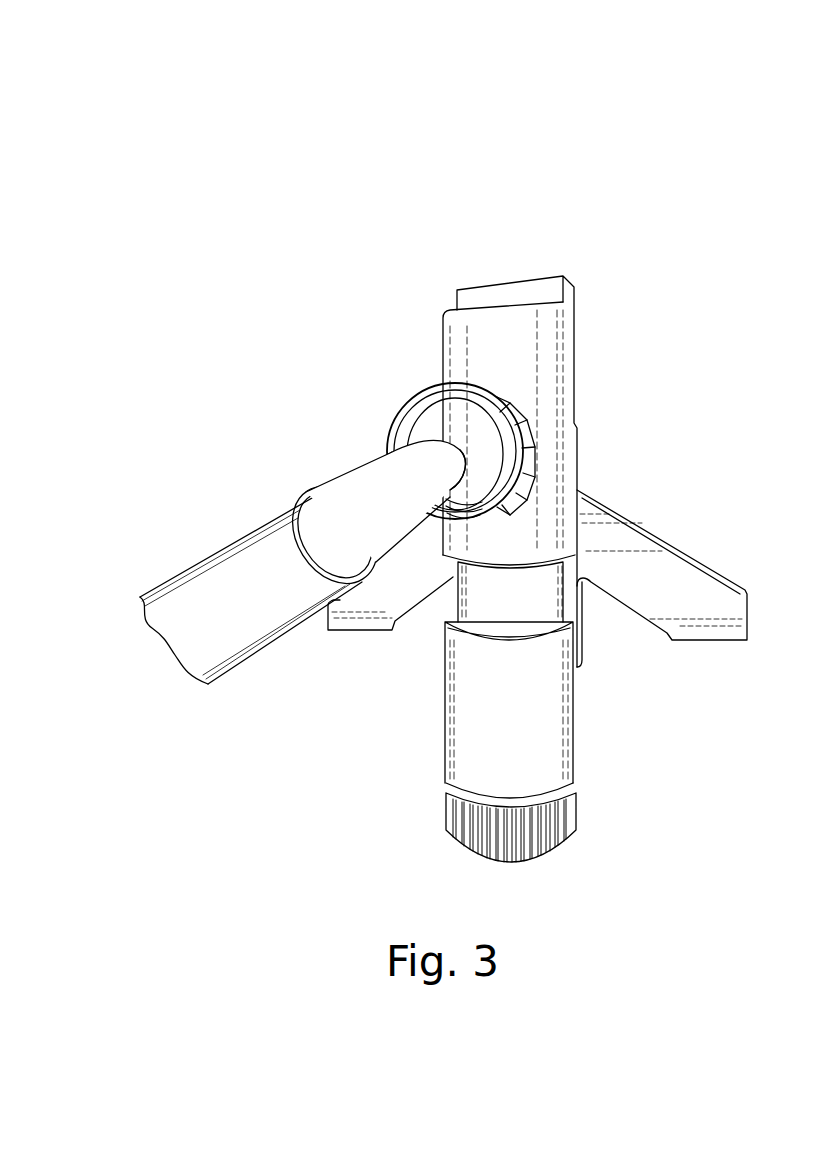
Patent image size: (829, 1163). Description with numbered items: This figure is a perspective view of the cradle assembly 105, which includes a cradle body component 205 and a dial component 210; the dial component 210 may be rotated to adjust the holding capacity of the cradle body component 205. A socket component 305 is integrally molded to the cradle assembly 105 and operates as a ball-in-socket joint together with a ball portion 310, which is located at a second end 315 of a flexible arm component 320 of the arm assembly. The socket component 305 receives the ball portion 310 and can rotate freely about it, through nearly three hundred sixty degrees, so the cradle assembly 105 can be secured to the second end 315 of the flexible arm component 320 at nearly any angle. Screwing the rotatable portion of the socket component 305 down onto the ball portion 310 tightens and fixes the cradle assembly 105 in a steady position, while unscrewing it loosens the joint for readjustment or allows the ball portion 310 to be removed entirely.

The cradle assembly 105 is at (434, 458).
The cradle body component 205 is at (547, 343).
The dial component 210 is at (569, 847).
The socket component 305 is at (427, 387).
The ball portion 310 is at (477, 469).
The second end 315 is at (441, 457).
The flexible arm component 320 is at (250, 577).